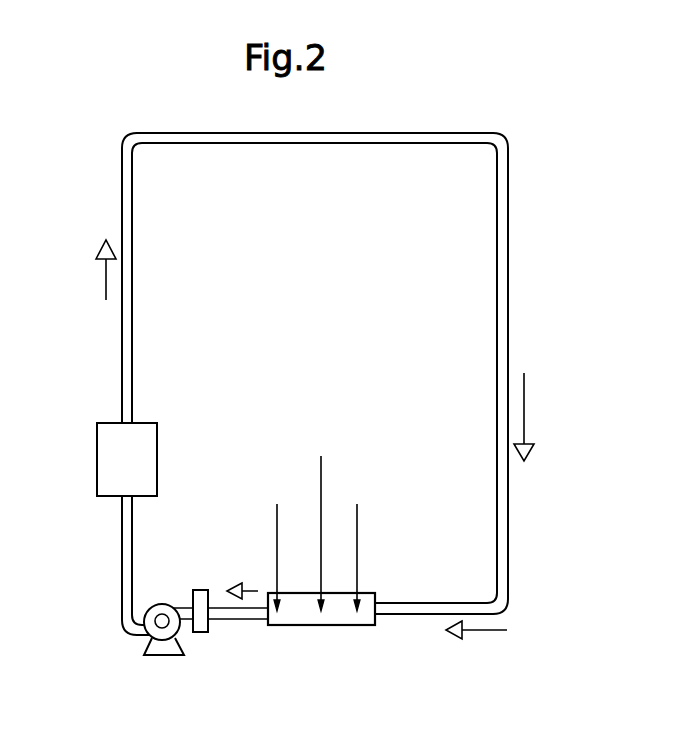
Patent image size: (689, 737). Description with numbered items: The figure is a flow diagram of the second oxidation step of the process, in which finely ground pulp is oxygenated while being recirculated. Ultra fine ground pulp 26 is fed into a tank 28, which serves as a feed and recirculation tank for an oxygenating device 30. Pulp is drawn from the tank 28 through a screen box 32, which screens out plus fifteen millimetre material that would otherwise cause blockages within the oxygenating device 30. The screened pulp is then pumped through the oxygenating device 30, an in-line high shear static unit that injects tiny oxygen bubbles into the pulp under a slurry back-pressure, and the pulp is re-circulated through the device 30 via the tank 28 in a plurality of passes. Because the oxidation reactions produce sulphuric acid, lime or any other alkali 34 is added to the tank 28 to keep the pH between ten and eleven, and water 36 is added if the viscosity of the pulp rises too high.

The ultra fine ground pulp 26 is at (362, 543).
The tank 28 is at (309, 618).
The oxygenating device 30 is at (89, 456).
The screen box 32 is at (198, 625).
The lime or other alkali 34 is at (324, 520).
The water 36 is at (279, 543).